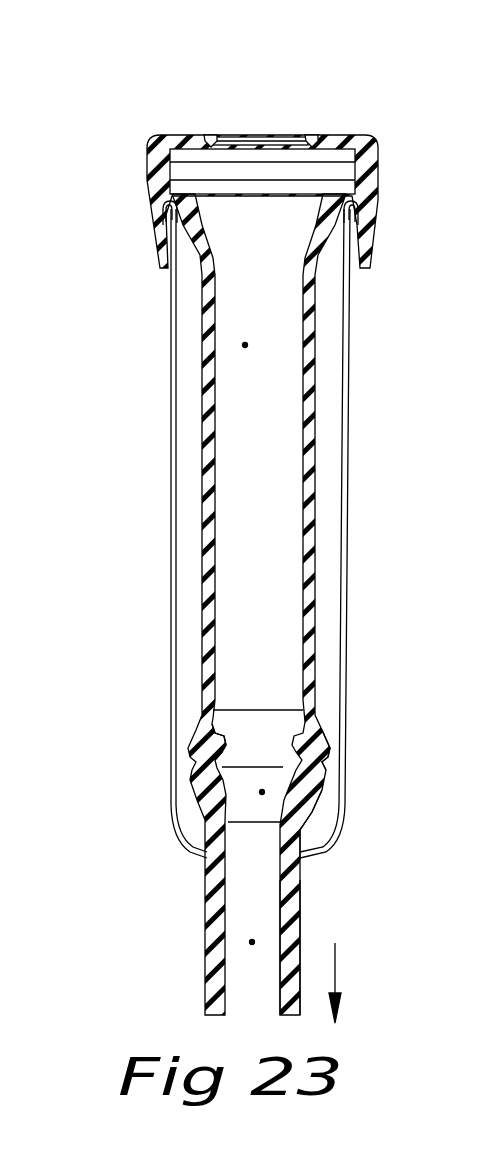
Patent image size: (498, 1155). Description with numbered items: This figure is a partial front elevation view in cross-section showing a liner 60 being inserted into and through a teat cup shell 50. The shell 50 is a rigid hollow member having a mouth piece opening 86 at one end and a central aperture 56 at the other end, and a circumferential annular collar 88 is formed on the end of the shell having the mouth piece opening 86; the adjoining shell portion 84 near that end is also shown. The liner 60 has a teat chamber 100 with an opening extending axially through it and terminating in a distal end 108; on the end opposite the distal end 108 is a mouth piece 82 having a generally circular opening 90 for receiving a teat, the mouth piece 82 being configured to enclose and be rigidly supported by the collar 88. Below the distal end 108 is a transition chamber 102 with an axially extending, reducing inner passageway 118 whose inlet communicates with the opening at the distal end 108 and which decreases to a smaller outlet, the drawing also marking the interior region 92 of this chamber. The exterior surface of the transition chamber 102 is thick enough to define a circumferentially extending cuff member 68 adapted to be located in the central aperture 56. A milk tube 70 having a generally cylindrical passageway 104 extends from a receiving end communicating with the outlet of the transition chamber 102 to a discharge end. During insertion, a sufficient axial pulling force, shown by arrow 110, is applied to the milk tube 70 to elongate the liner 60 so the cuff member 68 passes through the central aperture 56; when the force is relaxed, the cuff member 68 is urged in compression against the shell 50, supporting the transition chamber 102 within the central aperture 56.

The teat cup shell 50 is at (170, 513).
The central aperture 56 is at (205, 862).
The liner 60 is at (203, 452).
The cuff member 68 is at (300, 808).
The milk tube 70 is at (302, 921).
The mouth piece 82 is at (355, 137).
The cap skirt 84 is at (330, 257).
The mouth piece opening 86 is at (168, 204).
The circumferential annular collar 88 is at (360, 218).
The circular opening 90 is at (291, 136).
The chamber 92 is at (262, 792).
The teat chamber 100 is at (243, 346).
The transition chamber 102 is at (312, 762).
The passageway 104 is at (252, 942).
The distal end 108 is at (292, 710).
The arrow 110 is at (335, 967).
The inner passageway 118 is at (222, 737).